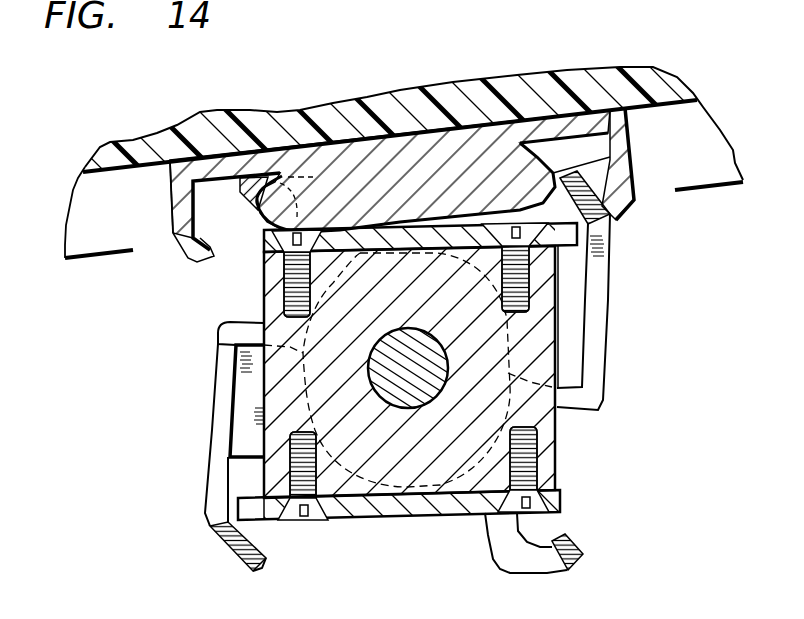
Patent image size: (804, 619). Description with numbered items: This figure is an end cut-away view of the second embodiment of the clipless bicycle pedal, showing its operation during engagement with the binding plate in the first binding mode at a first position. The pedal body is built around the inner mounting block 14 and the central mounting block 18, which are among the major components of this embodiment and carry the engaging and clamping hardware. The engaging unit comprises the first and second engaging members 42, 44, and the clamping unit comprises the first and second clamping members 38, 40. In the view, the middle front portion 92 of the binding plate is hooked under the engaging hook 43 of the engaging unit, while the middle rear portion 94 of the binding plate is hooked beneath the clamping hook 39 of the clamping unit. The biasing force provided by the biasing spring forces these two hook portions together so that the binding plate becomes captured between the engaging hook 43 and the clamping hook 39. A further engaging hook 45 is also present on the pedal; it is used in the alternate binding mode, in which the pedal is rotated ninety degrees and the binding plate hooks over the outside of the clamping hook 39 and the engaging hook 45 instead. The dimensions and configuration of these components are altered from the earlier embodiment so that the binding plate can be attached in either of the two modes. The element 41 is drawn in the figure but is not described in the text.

The inner mounting block 14 is at (202, 348).
The central mounting block 18 is at (398, 380).
The first clamping member 38 is at (631, 290).
The clamping hook 39 is at (652, 164).
The second clamping member 40 is at (207, 435).
The clip tip 41 is at (216, 550).
The first engaging member 42 is at (215, 230).
The engaging hook 43 is at (197, 193).
The second engaging member 44 is at (402, 521).
The engaging hook 45 is at (565, 544).
The middle front portion 92 is at (215, 208).
The middle rear portion 94 is at (429, 174).